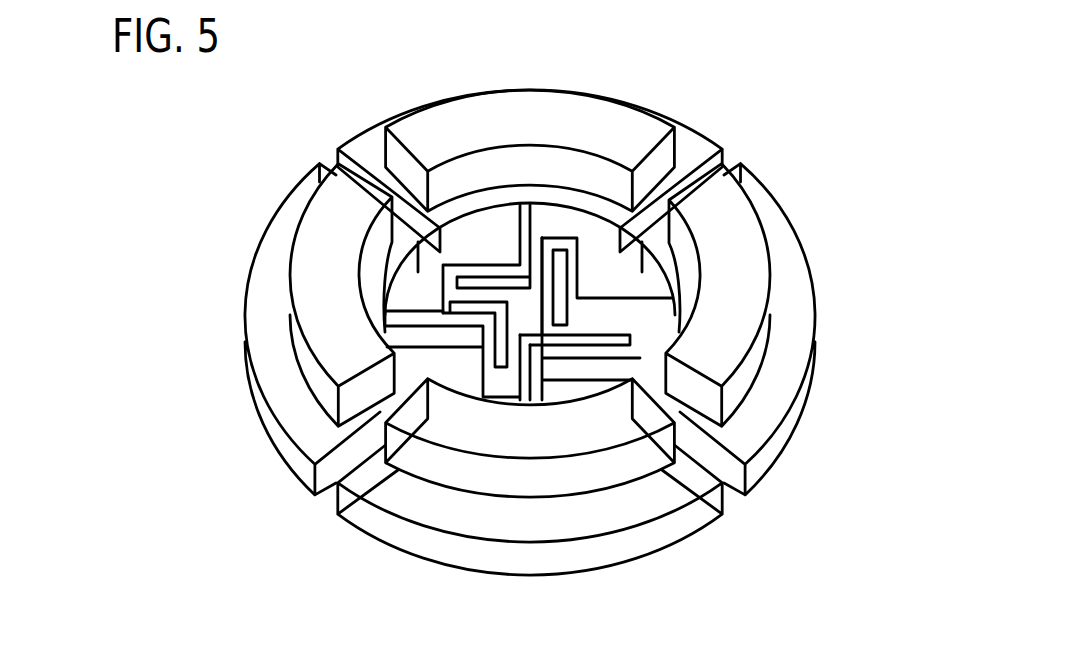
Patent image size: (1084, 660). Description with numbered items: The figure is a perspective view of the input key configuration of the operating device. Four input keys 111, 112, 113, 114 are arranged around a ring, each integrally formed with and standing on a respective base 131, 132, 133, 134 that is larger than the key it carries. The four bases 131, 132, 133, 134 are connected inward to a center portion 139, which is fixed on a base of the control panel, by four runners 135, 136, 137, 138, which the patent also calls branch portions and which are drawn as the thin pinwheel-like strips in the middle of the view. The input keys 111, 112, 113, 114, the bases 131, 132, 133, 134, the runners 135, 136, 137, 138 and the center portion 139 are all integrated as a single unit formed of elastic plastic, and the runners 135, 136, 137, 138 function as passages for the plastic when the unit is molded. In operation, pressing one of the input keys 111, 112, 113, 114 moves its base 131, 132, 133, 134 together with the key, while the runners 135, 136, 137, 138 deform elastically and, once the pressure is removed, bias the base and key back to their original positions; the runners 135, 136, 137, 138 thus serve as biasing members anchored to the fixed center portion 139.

The input key 111 is at (532, 100).
The input key 112 is at (315, 265).
The input key 113 is at (550, 430).
The input key 114 is at (748, 265).
The base 131 is at (690, 140).
The base 132 is at (298, 202).
The base 133 is at (455, 513).
The base 134 is at (783, 353).
The runner 135 is at (495, 237).
The runner 136 is at (452, 285).
The runner 137 is at (630, 352).
The runner 138 is at (643, 307).
The center portion 139 is at (537, 305).